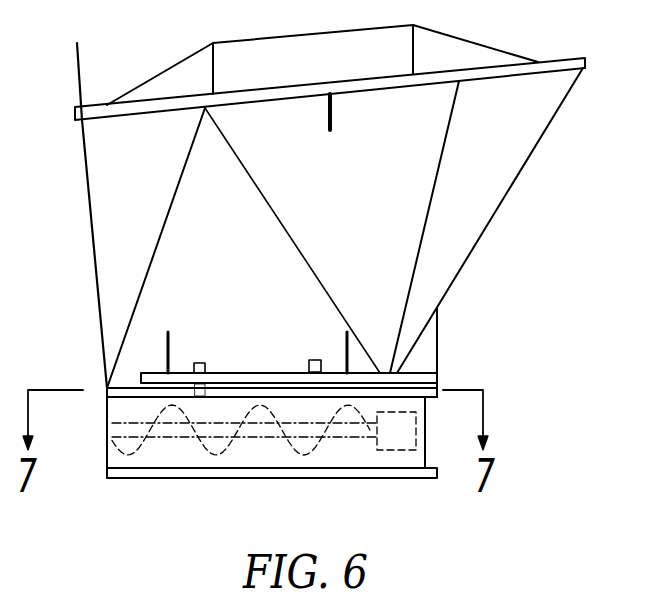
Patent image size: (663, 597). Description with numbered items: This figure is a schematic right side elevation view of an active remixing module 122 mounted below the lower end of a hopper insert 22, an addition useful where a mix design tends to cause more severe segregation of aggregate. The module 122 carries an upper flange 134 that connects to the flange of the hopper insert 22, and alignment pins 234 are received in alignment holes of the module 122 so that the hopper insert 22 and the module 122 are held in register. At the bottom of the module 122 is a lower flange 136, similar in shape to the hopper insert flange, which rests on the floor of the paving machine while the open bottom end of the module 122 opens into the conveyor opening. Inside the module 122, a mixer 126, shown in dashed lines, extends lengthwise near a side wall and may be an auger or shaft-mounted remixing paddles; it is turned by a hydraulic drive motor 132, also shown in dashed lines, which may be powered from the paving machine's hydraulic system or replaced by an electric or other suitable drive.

The hopper insert 22 is at (554, 148).
The active remixing module 122 is at (310, 408).
The mixer 126 is at (251, 438).
The hydraulic drive motor 132 is at (403, 450).
The upper flange 134 is at (412, 397).
The lower flange 136 is at (112, 472).
The alignment pins 234 is at (200, 362).